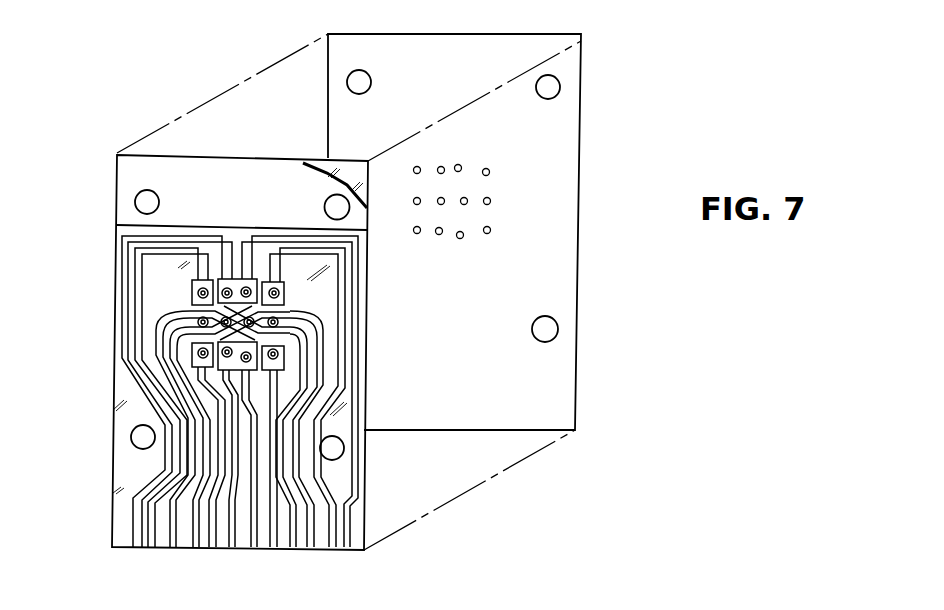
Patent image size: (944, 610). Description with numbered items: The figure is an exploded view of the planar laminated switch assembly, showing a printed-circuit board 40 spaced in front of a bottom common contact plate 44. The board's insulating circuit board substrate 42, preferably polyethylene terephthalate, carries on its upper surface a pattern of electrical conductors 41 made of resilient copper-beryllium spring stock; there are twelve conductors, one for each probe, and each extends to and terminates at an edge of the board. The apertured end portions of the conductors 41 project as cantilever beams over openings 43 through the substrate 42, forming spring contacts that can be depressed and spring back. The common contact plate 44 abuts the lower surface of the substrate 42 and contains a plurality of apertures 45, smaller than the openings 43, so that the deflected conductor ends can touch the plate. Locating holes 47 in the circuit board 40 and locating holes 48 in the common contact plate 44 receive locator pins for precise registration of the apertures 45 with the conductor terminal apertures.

The printed-circuit board 40 is at (112, 148).
The pattern of electrical conductors 41 is at (127, 280).
The circuit board substrate 42 is at (362, 175).
The openings 43 is at (192, 292).
The bottom common contact plate 44 is at (577, 172).
The apertures 45 is at (462, 166).
The locating holes 47 is at (158, 202).
The locating holes 48 is at (371, 80).